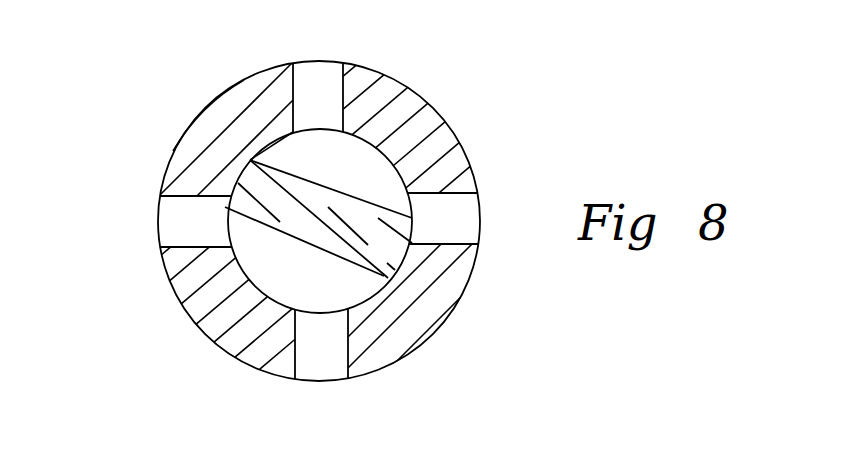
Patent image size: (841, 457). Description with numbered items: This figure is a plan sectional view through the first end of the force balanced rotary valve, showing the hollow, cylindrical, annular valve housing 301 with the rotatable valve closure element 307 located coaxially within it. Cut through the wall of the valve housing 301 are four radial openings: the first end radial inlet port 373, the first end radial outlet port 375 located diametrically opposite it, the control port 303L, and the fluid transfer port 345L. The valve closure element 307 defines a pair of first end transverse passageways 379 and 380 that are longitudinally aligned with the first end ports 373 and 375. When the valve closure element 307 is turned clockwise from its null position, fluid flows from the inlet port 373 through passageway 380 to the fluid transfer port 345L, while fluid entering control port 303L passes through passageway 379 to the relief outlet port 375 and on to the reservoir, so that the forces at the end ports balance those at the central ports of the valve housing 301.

The valve housing 301 is at (359, 221).
The control port 303L is at (313, 70).
The valve closure element 307 is at (355, 225).
The fluid transfer port 345L is at (321, 356).
The first end radial inlet port 373 is at (175, 227).
The first end radial outlet port 375 is at (455, 222).
The first end transverse passageway 379 is at (358, 182).
The first end transverse passageway 380 is at (311, 283).